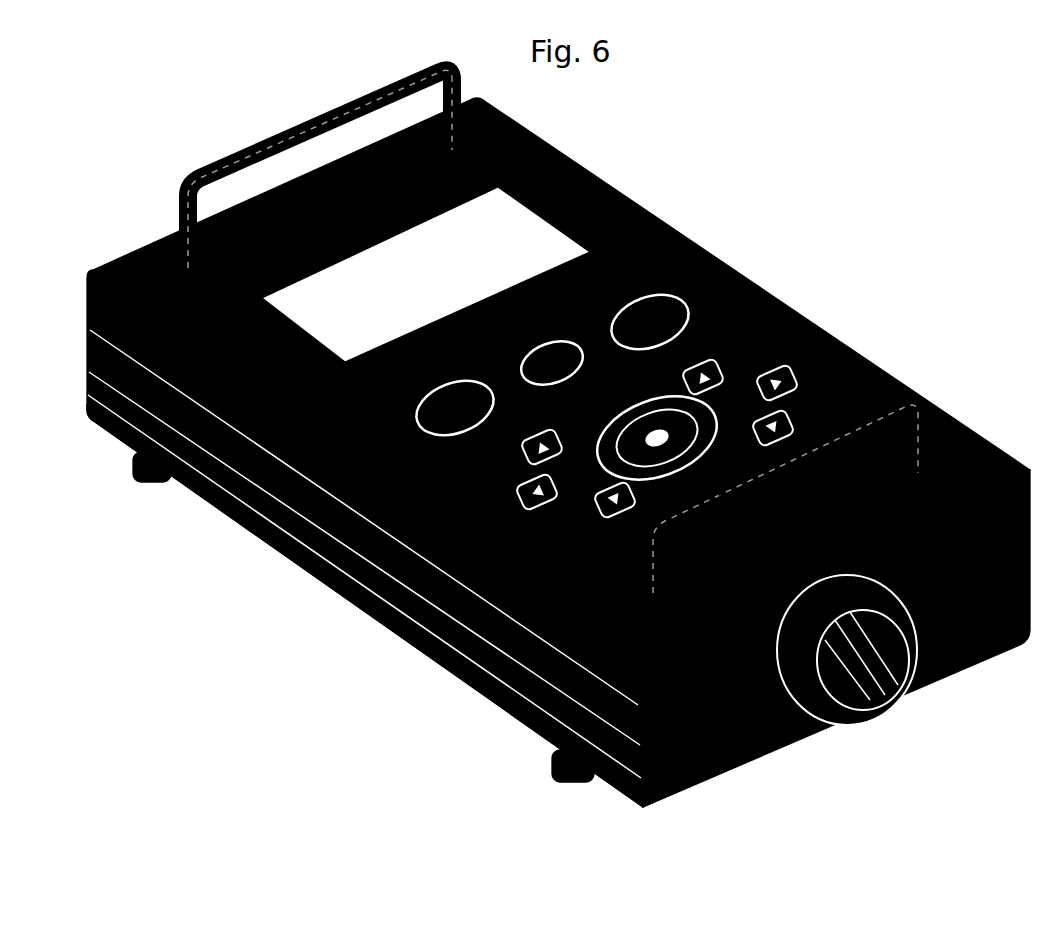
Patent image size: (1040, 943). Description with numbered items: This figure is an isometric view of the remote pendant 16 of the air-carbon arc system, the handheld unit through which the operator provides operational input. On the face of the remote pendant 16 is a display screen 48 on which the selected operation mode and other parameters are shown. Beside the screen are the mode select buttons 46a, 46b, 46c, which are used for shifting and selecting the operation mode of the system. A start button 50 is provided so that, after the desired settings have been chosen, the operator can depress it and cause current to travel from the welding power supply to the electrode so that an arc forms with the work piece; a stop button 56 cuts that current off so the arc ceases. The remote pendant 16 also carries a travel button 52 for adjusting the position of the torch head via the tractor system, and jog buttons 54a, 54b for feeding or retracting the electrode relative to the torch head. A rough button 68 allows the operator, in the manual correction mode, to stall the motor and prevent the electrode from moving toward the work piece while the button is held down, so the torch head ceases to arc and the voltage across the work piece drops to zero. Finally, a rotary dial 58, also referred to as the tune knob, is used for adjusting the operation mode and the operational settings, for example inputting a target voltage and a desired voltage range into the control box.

The remote pendant 16 is at (922, 121).
The display screen 48 is at (490, 207).
The rough button 68 is at (562, 340).
The stop button 56 is at (682, 300).
The mode select button 46a is at (716, 368).
The mode select button 46c is at (792, 380).
The mode select button 46b is at (790, 420).
The start button 50 is at (270, 547).
The jog button 54a is at (357, 612).
The travel button 52 is at (400, 640).
The jog button 54b is at (436, 665).
The rotary dial 58 is at (630, 812).